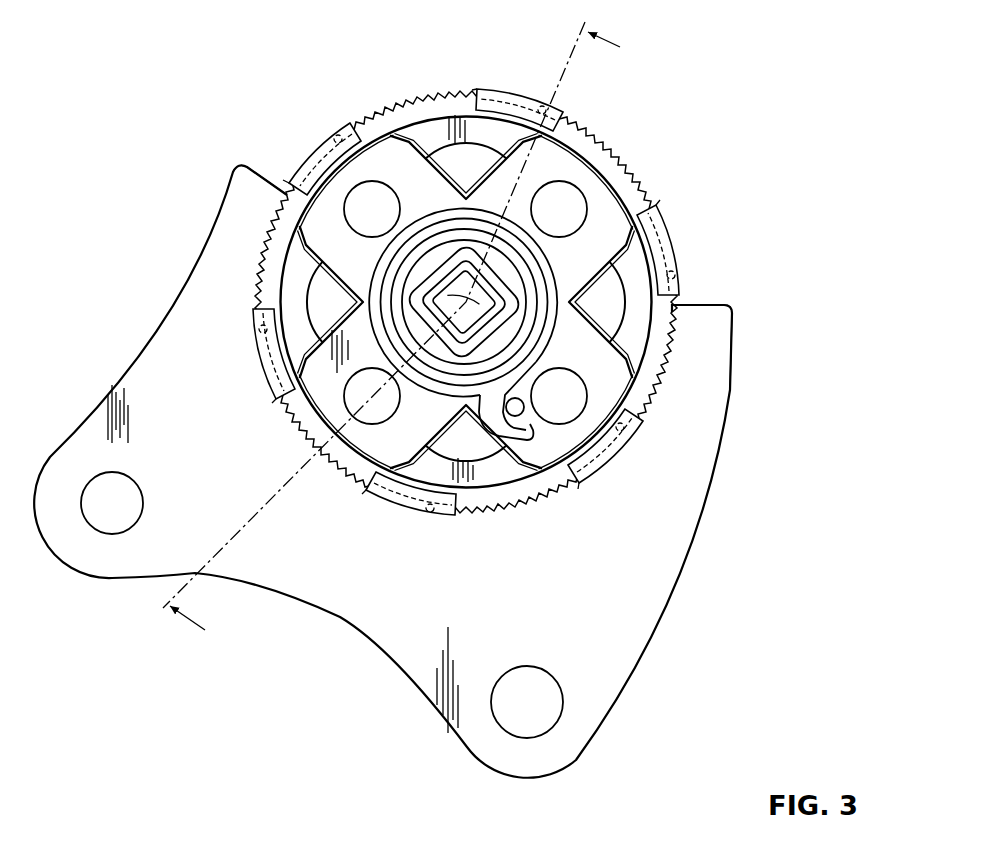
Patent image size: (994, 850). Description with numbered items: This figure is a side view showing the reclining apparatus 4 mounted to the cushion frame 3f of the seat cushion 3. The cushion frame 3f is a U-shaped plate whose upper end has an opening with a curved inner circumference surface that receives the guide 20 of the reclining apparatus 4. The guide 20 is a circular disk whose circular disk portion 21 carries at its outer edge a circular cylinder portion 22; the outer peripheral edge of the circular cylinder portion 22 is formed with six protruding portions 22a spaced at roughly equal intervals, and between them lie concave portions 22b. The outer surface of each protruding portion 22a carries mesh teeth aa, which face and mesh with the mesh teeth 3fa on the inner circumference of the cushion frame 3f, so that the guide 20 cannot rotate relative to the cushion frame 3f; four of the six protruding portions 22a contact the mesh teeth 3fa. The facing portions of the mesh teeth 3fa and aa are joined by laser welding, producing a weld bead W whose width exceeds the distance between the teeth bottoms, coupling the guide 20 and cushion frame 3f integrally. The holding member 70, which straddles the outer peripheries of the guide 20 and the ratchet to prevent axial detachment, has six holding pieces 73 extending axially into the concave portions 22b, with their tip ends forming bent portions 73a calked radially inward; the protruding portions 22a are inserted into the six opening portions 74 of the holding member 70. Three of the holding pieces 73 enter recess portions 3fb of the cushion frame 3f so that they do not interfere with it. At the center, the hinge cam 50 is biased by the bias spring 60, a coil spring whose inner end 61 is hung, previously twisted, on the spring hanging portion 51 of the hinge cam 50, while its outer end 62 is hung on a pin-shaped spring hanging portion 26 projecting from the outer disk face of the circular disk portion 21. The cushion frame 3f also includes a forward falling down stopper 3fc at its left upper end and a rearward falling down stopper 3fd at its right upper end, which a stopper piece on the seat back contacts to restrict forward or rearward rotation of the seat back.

The reclining apparatus 4 is at (735, 97).
The seat cushion 3 is at (446, 433).
The cushion frame 3f is at (173, 323).
The mesh teeth 3fa is at (480, 424).
The mesh teeth aa is at (480, 424).
The weld bead W is at (267, 240).
The recess portions 3fb is at (263, 368).
The forward falling down stopper 3fc is at (250, 166).
The rearward falling down stopper 3fd is at (703, 305).
The guide 20 is at (543, 170).
The circular disk portion 21 is at (637, 278).
The circular cylinder portion 22 is at (469, 294).
The protruding portions 22a is at (469, 293).
The opening portions 74 is at (469, 293).
The concave portions 22b is at (335, 138).
The spring hanging portions 26 is at (527, 445).
The hinge cam 50 is at (347, 263).
The spring hanging portion 51 is at (347, 263).
The bias spring 60 is at (389, 334).
The inner end 61 is at (433, 327).
The outer end 62 is at (512, 418).
The holding member 70 is at (481, 294).
The holding pieces 73 is at (481, 294).
The bent portion 73a is at (481, 294).